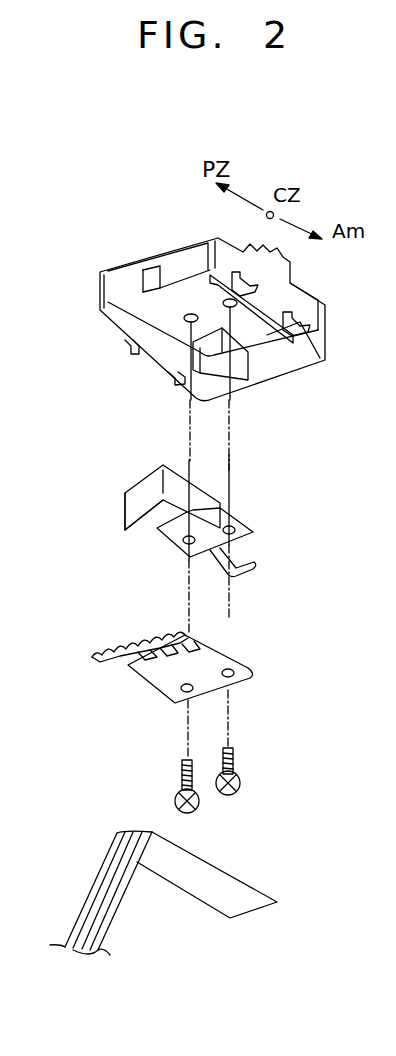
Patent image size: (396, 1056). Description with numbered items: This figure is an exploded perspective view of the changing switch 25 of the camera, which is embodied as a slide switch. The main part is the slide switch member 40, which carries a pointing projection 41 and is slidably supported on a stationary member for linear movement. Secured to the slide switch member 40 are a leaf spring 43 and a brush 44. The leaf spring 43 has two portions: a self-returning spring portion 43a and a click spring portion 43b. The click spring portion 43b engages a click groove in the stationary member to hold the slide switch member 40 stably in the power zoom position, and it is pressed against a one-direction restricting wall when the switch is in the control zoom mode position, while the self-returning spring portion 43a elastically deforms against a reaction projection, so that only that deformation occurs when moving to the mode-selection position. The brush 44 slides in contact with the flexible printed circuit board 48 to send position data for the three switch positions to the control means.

The changing switch 25 is at (106, 220).
The slide switch member 40 is at (303, 307).
The pointing projection 41 is at (272, 268).
The leaf spring 43 is at (228, 513).
The self-returning spring portion 43a is at (133, 507).
The click spring portion 43b is at (263, 570).
The brush 44 is at (152, 667).
The flexible printed circuit board 48 is at (232, 907).